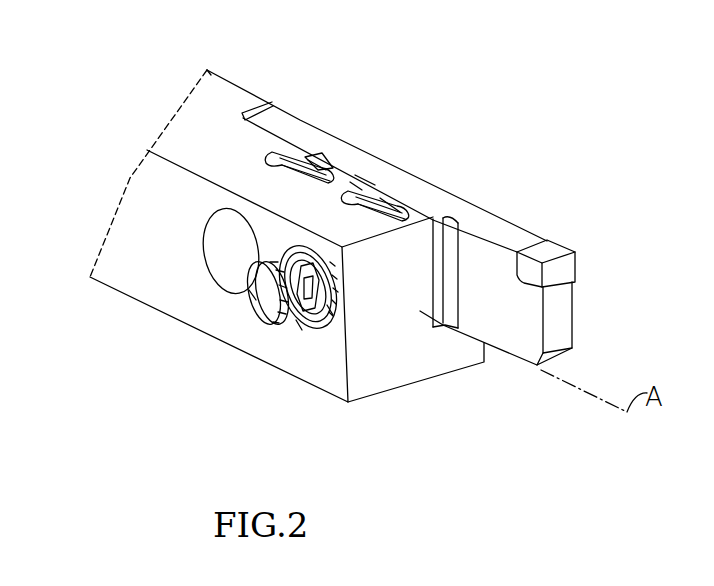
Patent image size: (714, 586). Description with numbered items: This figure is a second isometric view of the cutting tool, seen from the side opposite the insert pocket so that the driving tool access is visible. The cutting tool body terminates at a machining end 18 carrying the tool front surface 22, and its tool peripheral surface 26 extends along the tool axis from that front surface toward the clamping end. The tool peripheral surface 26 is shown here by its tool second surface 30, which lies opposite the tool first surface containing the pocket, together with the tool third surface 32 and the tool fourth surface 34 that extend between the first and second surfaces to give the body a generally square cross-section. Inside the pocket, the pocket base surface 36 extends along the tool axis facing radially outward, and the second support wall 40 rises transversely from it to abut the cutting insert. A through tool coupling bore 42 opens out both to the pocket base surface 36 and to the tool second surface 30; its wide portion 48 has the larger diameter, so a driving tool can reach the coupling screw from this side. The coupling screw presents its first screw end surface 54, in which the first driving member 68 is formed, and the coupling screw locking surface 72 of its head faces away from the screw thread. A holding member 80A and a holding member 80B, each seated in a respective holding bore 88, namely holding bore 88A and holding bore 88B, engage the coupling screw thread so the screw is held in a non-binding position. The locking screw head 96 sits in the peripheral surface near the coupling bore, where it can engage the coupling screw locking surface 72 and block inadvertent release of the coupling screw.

The machining end 18 is at (609, 232).
The tool front surface 22 is at (362, 378).
The tool peripheral surface 26 is at (223, 117).
The tool second surface 30 is at (122, 272).
The tool third surface 32 is at (213, 95).
The tool fourth surface 34 is at (412, 385).
The pocket base surface 36 is at (356, 184).
The second support wall 40 is at (320, 154).
The tool coupling bore 42 is at (221, 256).
The wide portion 48 is at (235, 270).
The first screw end surface 54 is at (338, 282).
The first driving member 68 is at (300, 328).
The coupling screw locking surface 72 is at (331, 312).
The holding member 80A is at (318, 162).
The holding member 80B is at (352, 204).
The holding bore 88 is at (355, 194).
The holding bore 88A is at (326, 168).
The holding bore 88B is at (360, 223).
The locking screw head 96 is at (255, 298).